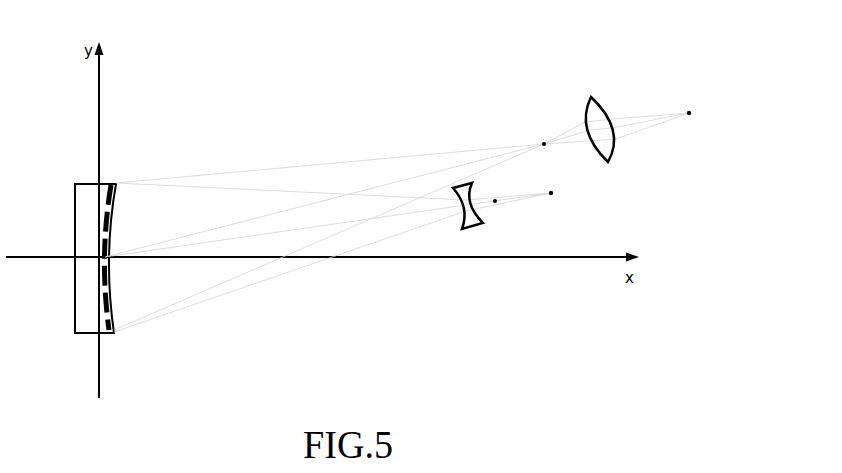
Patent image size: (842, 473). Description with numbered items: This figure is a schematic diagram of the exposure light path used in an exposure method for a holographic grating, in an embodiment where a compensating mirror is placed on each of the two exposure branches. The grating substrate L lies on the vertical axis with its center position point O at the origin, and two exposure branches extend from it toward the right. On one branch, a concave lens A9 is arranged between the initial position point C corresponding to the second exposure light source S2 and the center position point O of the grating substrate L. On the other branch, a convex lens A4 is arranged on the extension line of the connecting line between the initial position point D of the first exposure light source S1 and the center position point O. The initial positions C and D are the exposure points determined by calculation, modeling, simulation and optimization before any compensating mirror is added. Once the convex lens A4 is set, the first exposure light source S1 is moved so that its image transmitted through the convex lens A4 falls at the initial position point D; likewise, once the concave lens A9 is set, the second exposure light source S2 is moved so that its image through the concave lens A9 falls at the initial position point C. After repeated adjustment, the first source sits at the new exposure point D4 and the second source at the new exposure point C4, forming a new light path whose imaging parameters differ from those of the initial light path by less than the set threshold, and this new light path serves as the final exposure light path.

The grating substrate L is at (75, 228).
The center position point of the grating substrate O is at (91, 268).
The convex lens A4 is at (591, 97).
The concave lens A9 is at (470, 227).
The initial position point of the first exposure light source D is at (549, 154).
The initial position point of the second exposure light source C is at (499, 211).
The first exposure light source S1 is at (683, 128).
The second exposure light source S2 is at (560, 192).
The new exposure point of the first exposure light source D4 is at (682, 100).
The new exposure point of the second exposure light source C4 is at (550, 212).